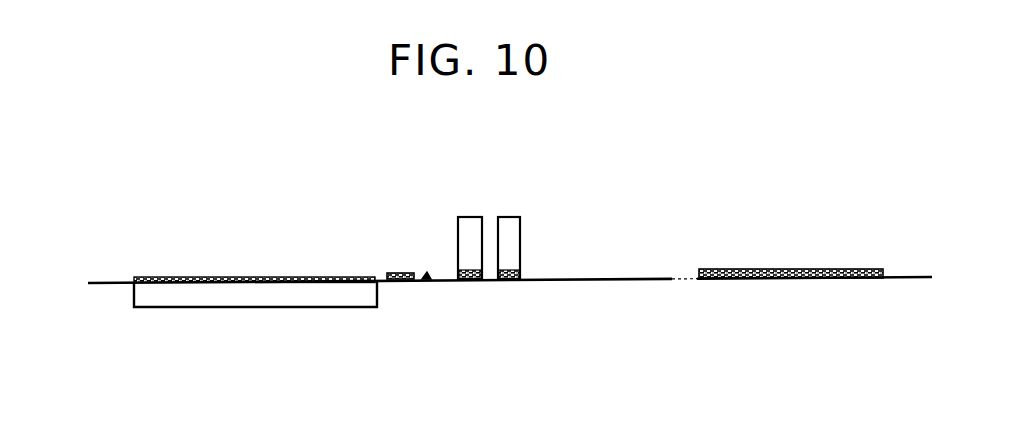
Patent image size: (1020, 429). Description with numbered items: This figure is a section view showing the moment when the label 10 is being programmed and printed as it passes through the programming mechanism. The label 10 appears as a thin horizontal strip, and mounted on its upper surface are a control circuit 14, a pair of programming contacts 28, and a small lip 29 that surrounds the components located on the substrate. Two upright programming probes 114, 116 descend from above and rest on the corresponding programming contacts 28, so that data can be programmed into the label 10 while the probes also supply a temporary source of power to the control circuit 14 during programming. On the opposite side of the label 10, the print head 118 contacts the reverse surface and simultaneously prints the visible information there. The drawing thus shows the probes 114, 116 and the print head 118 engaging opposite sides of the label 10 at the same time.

The label 10 is at (117, 298).
The control circuit 14 is at (402, 281).
The programming contacts 28 is at (472, 281).
The lip 29 is at (133, 281).
The programming probe 114 is at (463, 217).
The programming probe 116 is at (508, 217).
The print head 118 is at (332, 297).